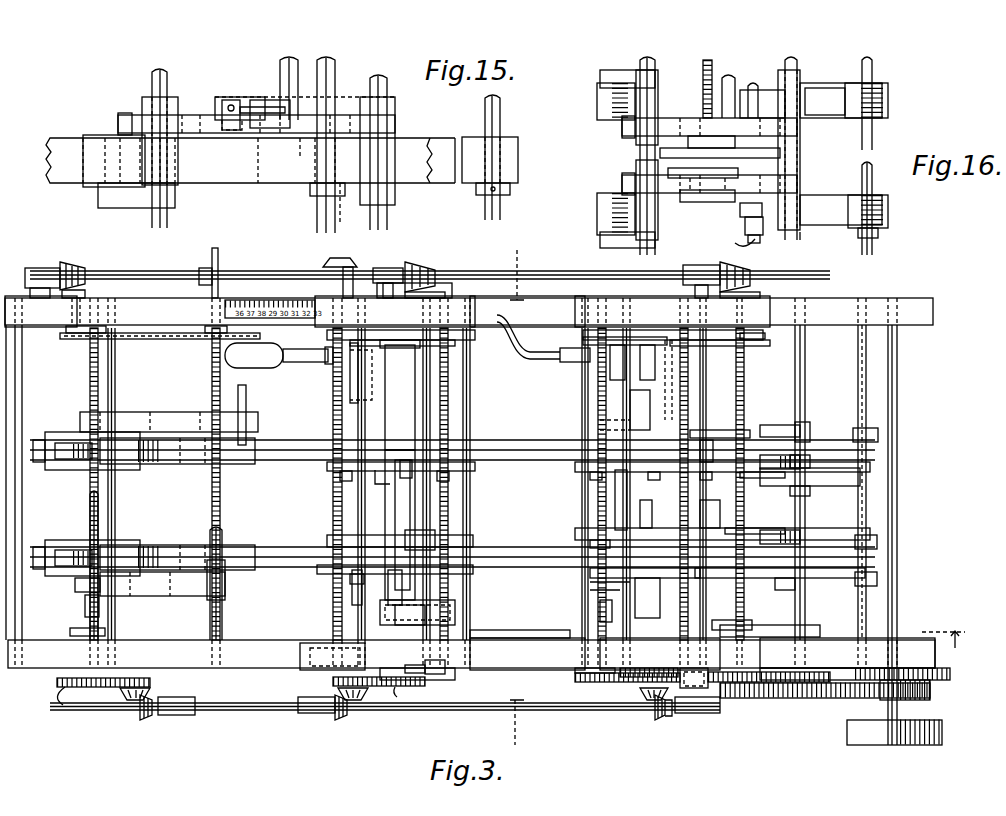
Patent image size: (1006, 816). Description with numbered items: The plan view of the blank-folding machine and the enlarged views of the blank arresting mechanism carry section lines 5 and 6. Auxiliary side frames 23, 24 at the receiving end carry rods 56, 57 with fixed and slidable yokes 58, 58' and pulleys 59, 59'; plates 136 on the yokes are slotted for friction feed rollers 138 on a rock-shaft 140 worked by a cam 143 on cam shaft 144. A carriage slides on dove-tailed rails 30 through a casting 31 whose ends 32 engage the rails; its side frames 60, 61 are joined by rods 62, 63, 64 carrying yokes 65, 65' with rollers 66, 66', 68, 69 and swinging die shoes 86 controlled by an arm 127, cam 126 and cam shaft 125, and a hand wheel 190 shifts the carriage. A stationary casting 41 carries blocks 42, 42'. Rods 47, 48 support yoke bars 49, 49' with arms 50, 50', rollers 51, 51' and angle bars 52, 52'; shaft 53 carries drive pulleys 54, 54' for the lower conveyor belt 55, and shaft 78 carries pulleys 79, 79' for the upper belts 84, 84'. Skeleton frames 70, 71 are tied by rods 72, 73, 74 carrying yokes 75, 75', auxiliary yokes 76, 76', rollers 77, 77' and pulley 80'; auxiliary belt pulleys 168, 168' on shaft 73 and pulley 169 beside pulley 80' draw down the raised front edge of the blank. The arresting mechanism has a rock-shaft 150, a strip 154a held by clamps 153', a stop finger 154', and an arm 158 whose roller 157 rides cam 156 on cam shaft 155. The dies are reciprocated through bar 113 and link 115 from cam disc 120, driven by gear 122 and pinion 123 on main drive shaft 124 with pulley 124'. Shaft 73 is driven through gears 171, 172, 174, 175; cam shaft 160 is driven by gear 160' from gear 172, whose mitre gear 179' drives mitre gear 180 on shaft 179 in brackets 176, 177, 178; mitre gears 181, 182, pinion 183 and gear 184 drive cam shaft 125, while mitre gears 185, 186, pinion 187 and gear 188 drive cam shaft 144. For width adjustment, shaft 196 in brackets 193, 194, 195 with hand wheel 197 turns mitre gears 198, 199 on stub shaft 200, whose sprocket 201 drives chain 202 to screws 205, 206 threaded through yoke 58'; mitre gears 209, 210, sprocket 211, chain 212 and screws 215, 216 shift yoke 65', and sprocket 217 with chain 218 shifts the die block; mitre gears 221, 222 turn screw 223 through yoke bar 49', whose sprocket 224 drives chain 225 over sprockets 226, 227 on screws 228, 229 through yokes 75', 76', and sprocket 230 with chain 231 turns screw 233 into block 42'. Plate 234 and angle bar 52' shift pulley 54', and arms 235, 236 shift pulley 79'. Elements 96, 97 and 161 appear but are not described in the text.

In FIG. 3, the section line 5 is at (953, 636).
In FIG. 3, the section line 6 is at (517, 498).
In FIG. 3, the lower frame beam 23 is at (471, 654).
In FIG. 3, the upper frame beam 24 is at (469, 311).
In FIG. 3, the frame member 30 is at (527, 483).
In FIG. 3, the cross bar 31 is at (345, 520).
In FIG. 3, the frame plate 32 is at (452, 292).
In FIG. 3, the block 41 is at (712, 516).
In FIG. 3, the carriage 42 is at (663, 598).
In FIG. 3, the carriage 42' is at (623, 401).
In FIG. 15, the rod 47 is at (150, 74).
In FIG. 16, the rod 47 is at (640, 158).
In FIG. 15, the rod 48 is at (382, 94).
In FIG. 16, the rod 48 is at (795, 66).
In FIG. 3, the rod 48 is at (805, 358).
In FIG. 15, the block 49 is at (168, 127).
In FIG. 16, the block 49 is at (658, 200).
In FIG. 16, the block 49' is at (664, 105).
In FIG. 15, the bracket 50 is at (136, 209).
In FIG. 16, the bracket 50 is at (605, 240).
In FIG. 16, the bracket 50' is at (627, 68).
In FIG. 15, the block 51 is at (99, 173).
In FIG. 16, the block 51 is at (593, 214).
In FIG. 16, the block 51' is at (598, 91).
In FIG. 15, the bar 52 is at (429, 174).
In FIG. 16, the bar 52 is at (841, 217).
In FIG. 16, the bar 52' is at (825, 112).
In FIG. 15, the rod 53 is at (500, 130).
In FIG. 16, the rod 53 is at (872, 182).
In FIG. 15, the block 54 is at (482, 176).
In FIG. 16, the block 54 is at (882, 216).
In FIG. 16, the block 54' is at (885, 103).
In FIG. 15, the bar 55 is at (238, 175).
In FIG. 3, the rod 56 is at (116, 522).
In FIG. 3, the rod 57 is at (212, 528).
In FIG. 3, the bar 58 is at (150, 593).
In FIG. 3, the bar 58' is at (169, 409).
In FIG. 3, the sleeve 59 is at (177, 545).
In FIG. 3, the sleeve 59' is at (177, 462).
In FIG. 3, the housing 60 is at (300, 654).
In FIG. 3, the frame member 61 is at (395, 311).
In FIG. 3, the rod 62 is at (358, 492).
In FIG. 3, the rod 63 is at (428, 512).
In FIG. 3, the rod 64 is at (470, 512).
In FIG. 3, the member 65 is at (413, 526).
In FIG. 3, the member 65' is at (399, 476).
In FIG. 3, the cross bar 66 is at (386, 578).
In FIG. 3, the cross bar 66' is at (382, 448).
In FIG. 3, the rod 68 is at (366, 587).
In FIG. 3, the rod 69 is at (406, 597).
In FIG. 3, the frame member 70 is at (660, 654).
In FIG. 3, the frame member 71 is at (672, 311).
In FIG. 3, the rod 72 is at (582, 497).
In FIG. 3, the rod 73 is at (623, 497).
In FIG. 3, the rod 74 is at (706, 497).
In FIG. 3, the bar 75 is at (755, 517).
In FIG. 3, the bar 75' is at (762, 483).
In FIG. 3, the bar 76 is at (674, 581).
In FIG. 3, the bar 76' is at (726, 414).
In FIG. 3, the bar 77 is at (780, 581).
In FIG. 3, the bar 77' is at (716, 429).
In FIG. 3, the rod 78 is at (868, 508).
In FIG. 3, the block 79 is at (855, 552).
In FIG. 3, the block 79' is at (856, 424).
In FIG. 3, the bar 80' is at (780, 419).
In FIG. 3, the shaft 84 is at (452, 548).
In FIG. 3, the shaft 84' is at (452, 436).
In FIG. 3, the block 86 is at (784, 588).
In FIG. 3, the handle rod 96 is at (305, 349).
In FIG. 3, the handle 97 is at (254, 345).
In FIG. 3, the plate 113 is at (505, 630).
In FIG. 3, the frame member 115 is at (823, 644).
In FIG. 3, the gear 120 is at (835, 639).
In FIG. 3, the gear 122 is at (818, 698).
In FIG. 3, the gear 123 is at (926, 695).
In FIG. 3, the shaft 124 is at (916, 535).
In FIG. 3, the gear 124' is at (894, 743).
In FIG. 3, the housing 125 is at (335, 653).
In FIG. 3, the housing 126 is at (435, 635).
In FIG. 3, the block 127 is at (432, 674).
In FIG. 3, the bracket 136 is at (55, 432).
In FIG. 3, the gear 138 is at (68, 460).
In FIG. 3, the rod 140 is at (90, 508).
In FIG. 3, the bracket 143 is at (70, 632).
In FIG. 3, the bracket 144 is at (85, 606).
In FIG. 15, the box 150 is at (253, 97).
In FIG. 16, the box 150 is at (700, 168).
In FIG. 15, the pivot 153' is at (293, 89).
In FIG. 15, the plate 154' is at (239, 116).
In FIG. 16, the plate 154' is at (677, 155).
In FIG. 15, the block 154a is at (262, 103).
In FIG. 16, the block 154a is at (755, 90).
In FIG. 15, the rod 155 is at (320, 212).
In FIG. 16, the rod 155 is at (749, 250).
In FIG. 16, the member 156 is at (800, 240).
In FIG. 16, the block 157 is at (745, 228).
In FIG. 16, the block 158 is at (740, 210).
In FIG. 3, the member 160 is at (595, 602).
In FIG. 3, the rack 160' is at (685, 681).
In FIG. 3, the member 161 is at (654, 510).
In FIG. 3, the bar 168 is at (704, 555).
In FIG. 3, the bar 168' is at (715, 467).
In FIG. 3, the gear 169 is at (772, 469).
In FIG. 3, the bevel gear 171 is at (630, 682).
In FIG. 3, the rack 172 is at (652, 668).
In FIG. 3, the block 174 is at (694, 668).
In FIG. 3, the plate 175 is at (595, 668).
In FIG. 3, the collar 176 is at (185, 716).
In FIG. 3, the collar 177 is at (318, 714).
In FIG. 3, the collar 178 is at (694, 714).
In FIG. 3, the shaft 179 is at (385, 721).
In FIG. 3, the bevel gear 179' is at (649, 718).
In FIG. 3, the bevel gear 180 is at (664, 720).
In FIG. 3, the bevel gear 181 is at (340, 720).
In FIG. 3, the bevel gear 182 is at (362, 700).
In FIG. 3, the rack 183 is at (333, 680).
In FIG. 3, the rack 184 is at (408, 689).
In FIG. 3, the bevel gear 185 is at (147, 720).
In FIG. 3, the bevel gear 186 is at (128, 702).
In FIG. 3, the rack 187 is at (150, 682).
In FIG. 3, the member 188 is at (70, 698).
In FIG. 3, the post 190 is at (340, 268).
In FIG. 3, the bearing 193 is at (36, 268).
In FIG. 3, the bearing 194 is at (386, 268).
In FIG. 3, the bearing 195 is at (683, 268).
In FIG. 3, the pipe 196 is at (545, 300).
In FIG. 3, the shaft 197 is at (218, 262).
In FIG. 3, the bevel gear 198 is at (68, 265).
In FIG. 3, the bevel gear 199 is at (86, 288).
In FIG. 3, the frame end 200 is at (72, 312).
In FIG. 3, the bar 201 is at (72, 340).
In FIG. 3, the bar 202 is at (160, 339).
In FIG. 3, the rack 205 is at (90, 378).
In FIG. 3, the rack 206 is at (212, 362).
In FIG. 3, the bevel gear 209 is at (415, 265).
In FIG. 3, the bevel gear 210 is at (430, 290).
In FIG. 3, the plate 211 is at (408, 348).
In FIG. 3, the bar 212 is at (360, 345).
In FIG. 3, the rack 215 is at (333, 400).
In FIG. 3, the rack 216 is at (448, 378).
In FIG. 3, the housing 217 is at (401, 472).
In FIG. 3, the rod 218 is at (452, 350).
In FIG. 3, the bevel gear 221 is at (738, 266).
In FIG. 3, the bevel gear 222 is at (755, 290).
In FIG. 16, the rack 223 is at (710, 66).
In FIG. 3, the rack 223 is at (744, 366).
In FIG. 3, the bar 224 is at (754, 338).
In FIG. 3, the rod 225 is at (690, 350).
In FIG. 3, the bar 226 is at (675, 340).
In FIG. 3, the bar 227 is at (598, 330).
In FIG. 3, the rack 228 is at (688, 380).
In FIG. 3, the rack 229 is at (598, 385).
In FIG. 3, the pipe connector 230 is at (580, 360).
In FIG. 3, the bar 231 is at (645, 345).
In FIG. 3, the member 233 is at (652, 372).
In FIG. 16, the bar 234 is at (840, 83).
In FIG. 3, the bar 235 is at (828, 470).
In FIG. 3, the block 236 is at (812, 420).